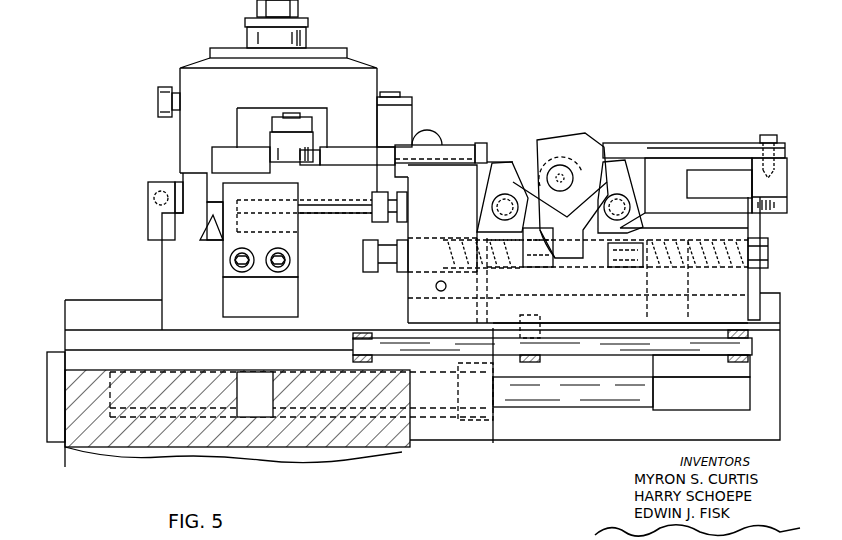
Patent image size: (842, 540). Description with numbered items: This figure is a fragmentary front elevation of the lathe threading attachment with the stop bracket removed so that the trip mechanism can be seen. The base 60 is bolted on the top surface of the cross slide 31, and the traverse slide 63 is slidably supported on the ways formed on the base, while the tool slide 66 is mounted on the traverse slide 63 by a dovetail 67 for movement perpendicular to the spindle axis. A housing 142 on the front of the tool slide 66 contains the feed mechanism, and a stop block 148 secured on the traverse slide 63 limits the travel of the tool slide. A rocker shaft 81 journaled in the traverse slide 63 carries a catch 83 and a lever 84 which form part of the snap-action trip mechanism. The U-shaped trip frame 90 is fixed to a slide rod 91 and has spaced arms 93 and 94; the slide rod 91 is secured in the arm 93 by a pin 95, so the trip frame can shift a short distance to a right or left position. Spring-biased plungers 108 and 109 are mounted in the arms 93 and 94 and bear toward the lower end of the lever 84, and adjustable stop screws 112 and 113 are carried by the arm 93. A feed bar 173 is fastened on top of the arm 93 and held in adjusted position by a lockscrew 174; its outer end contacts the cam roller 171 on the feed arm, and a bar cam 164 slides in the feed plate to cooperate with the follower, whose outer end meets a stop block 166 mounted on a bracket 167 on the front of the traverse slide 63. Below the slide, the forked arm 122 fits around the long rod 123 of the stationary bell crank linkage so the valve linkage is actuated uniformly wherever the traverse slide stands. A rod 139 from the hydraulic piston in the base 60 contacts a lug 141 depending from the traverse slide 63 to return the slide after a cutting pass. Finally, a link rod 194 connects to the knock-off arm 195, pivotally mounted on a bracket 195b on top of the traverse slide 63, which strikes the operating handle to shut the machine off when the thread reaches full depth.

The cross slide 31 is at (402, 455).
The base 60 is at (555, 441).
The traverse slide 63 is at (177, 259).
The tool slide 66 is at (182, 170).
The dovetail 67 is at (208, 224).
The rocker shaft 81 is at (555, 190).
The catch 83 is at (528, 150).
The lever 84 is at (571, 237).
The trip frame 90 is at (610, 311).
The slide rod 91 is at (466, 292).
The arm 93 is at (458, 207).
The arm 94 is at (700, 236).
The pin 95 is at (467, 268).
The spring-biased plunger 108 is at (549, 268).
The spring-biased plunger 109 is at (606, 268).
The adjustable stop screw 112 is at (372, 193).
The adjustable stop screw 113 is at (364, 258).
The forked arm 122 is at (537, 360).
The long rod 123 is at (704, 356).
The rod 139 is at (607, 406).
The lug 141 is at (710, 406).
The housing 142 is at (182, 80).
The stop block 148 is at (148, 205).
The bar cam 164 is at (354, 210).
The stop block 166 is at (232, 193).
The bracket 167 is at (287, 298).
The cam roller 171 is at (272, 152).
The feed bar 173 is at (366, 152).
The lockscrew 174 is at (433, 147).
The link rod 194 is at (669, 148).
The knock-off arm 195 is at (776, 214).
The bracket 195b is at (694, 192).